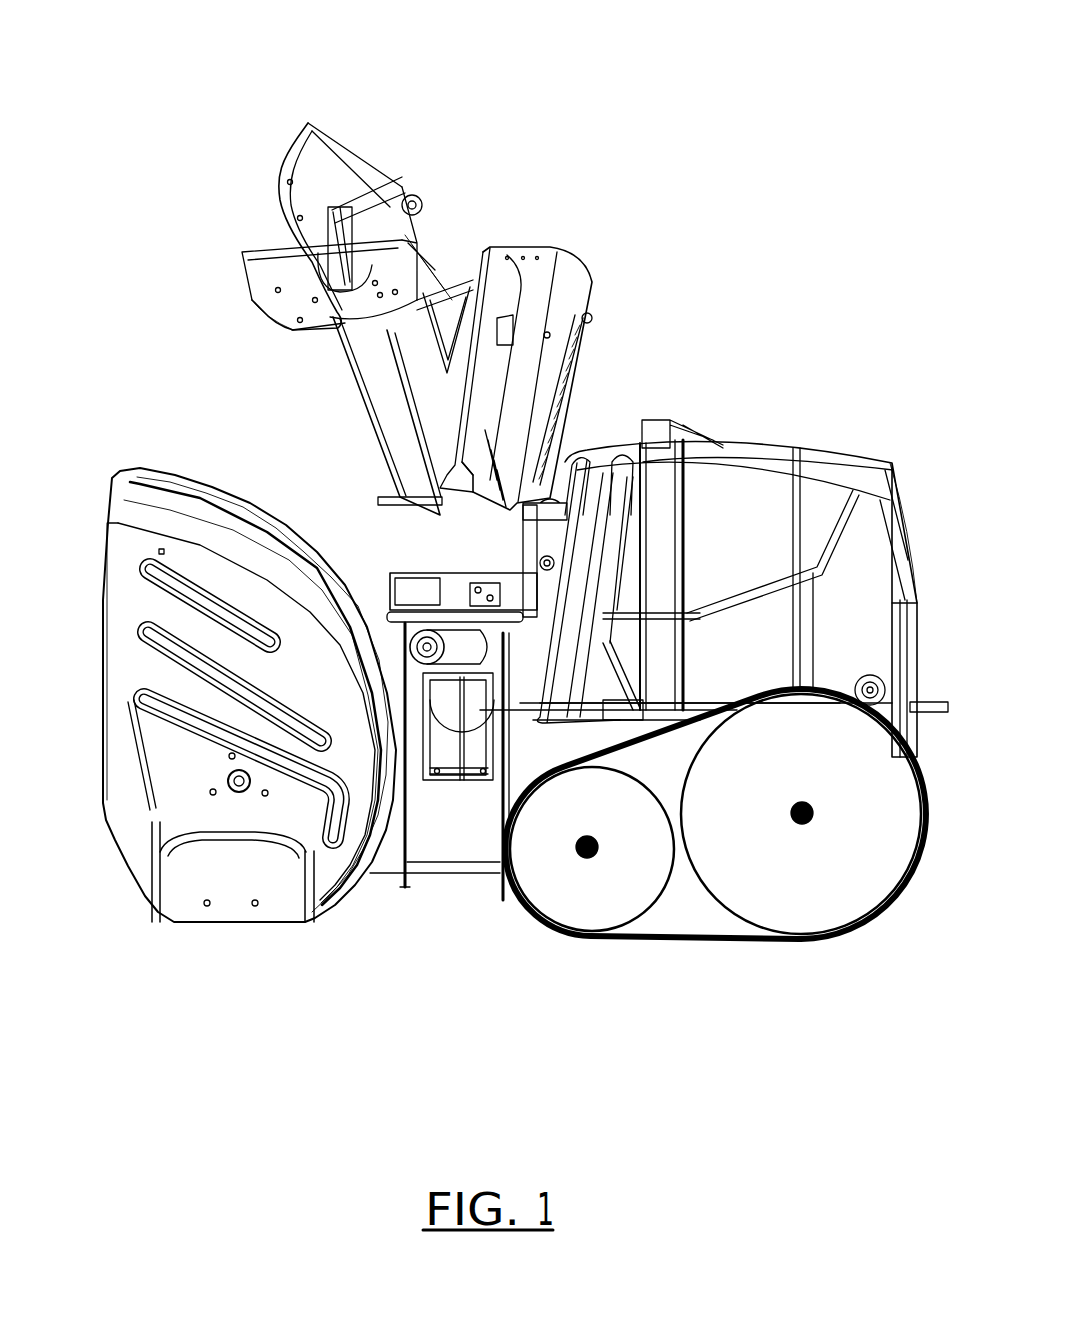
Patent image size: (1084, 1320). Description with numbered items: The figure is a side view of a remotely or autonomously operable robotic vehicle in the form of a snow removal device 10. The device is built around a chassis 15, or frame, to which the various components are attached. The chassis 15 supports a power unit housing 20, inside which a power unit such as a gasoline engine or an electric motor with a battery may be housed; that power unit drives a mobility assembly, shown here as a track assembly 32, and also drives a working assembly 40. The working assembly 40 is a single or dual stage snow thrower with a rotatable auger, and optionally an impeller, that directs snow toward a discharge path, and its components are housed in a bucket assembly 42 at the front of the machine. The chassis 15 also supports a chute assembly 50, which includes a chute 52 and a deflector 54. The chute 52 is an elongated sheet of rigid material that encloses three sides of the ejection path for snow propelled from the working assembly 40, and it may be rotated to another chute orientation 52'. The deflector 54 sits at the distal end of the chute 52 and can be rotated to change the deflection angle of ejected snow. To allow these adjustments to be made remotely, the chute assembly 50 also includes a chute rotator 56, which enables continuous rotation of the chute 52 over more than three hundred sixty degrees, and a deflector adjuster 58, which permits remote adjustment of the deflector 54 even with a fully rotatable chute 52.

The snow removal device 10 is at (793, 87).
The chassis 15 is at (520, 740).
The power unit housing 20 is at (725, 513).
The track assembly 32 is at (720, 917).
The working assembly 40 is at (120, 465).
The bucket assembly 42 is at (291, 809).
The chute assembly 50 is at (190, 217).
The chute 52 is at (377, 397).
The chute orientation 52' is at (562, 378).
The deflector 54 is at (307, 170).
The chute rotator 56 is at (401, 576).
The deflector adjuster 58 is at (437, 257).